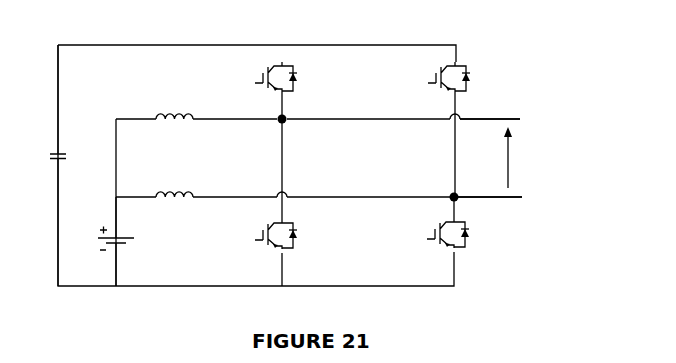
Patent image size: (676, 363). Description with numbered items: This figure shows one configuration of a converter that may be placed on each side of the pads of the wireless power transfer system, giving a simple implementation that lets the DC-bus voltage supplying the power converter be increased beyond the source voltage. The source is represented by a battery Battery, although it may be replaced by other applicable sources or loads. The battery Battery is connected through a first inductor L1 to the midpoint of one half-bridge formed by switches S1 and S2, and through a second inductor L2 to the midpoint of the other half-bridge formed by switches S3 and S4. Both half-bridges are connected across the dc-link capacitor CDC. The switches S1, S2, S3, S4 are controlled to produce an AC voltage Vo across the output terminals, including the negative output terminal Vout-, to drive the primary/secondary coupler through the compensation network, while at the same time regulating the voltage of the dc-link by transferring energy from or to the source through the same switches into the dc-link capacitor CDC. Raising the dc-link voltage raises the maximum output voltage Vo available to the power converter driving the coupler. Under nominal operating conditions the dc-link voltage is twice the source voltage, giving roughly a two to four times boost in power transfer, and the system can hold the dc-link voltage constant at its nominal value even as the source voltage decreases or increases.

The switch S1 is at (258, 77).
The switch S2 is at (258, 234).
The switch S3 is at (435, 77).
The switch S4 is at (435, 233).
The inductor L1 is at (174, 107).
The inductor L2 is at (174, 185).
The dc-link capacitor CDC is at (70, 165).
The battery Battery is at (140, 241).
The negative output terminal Vout- is at (494, 208).
The output voltage Vo is at (524, 157).